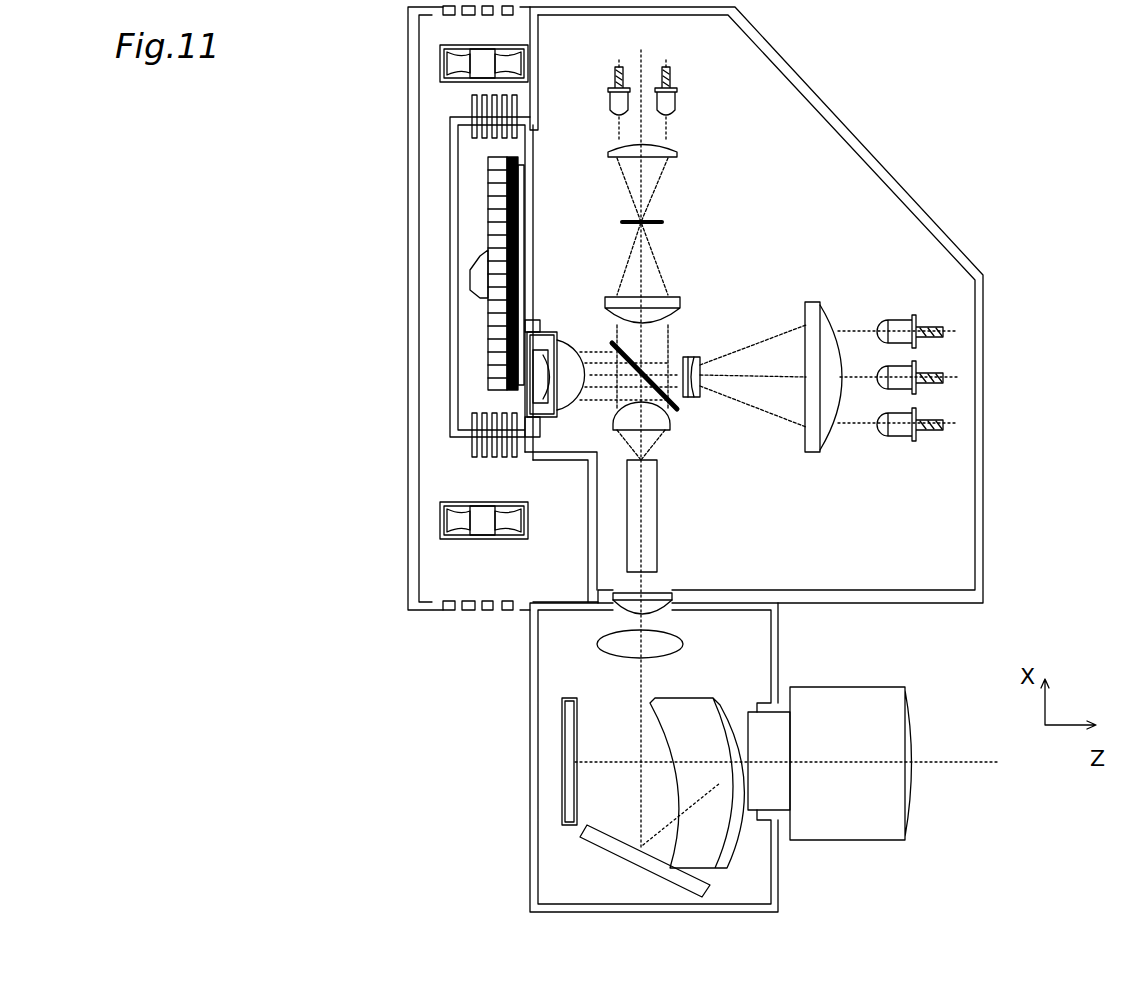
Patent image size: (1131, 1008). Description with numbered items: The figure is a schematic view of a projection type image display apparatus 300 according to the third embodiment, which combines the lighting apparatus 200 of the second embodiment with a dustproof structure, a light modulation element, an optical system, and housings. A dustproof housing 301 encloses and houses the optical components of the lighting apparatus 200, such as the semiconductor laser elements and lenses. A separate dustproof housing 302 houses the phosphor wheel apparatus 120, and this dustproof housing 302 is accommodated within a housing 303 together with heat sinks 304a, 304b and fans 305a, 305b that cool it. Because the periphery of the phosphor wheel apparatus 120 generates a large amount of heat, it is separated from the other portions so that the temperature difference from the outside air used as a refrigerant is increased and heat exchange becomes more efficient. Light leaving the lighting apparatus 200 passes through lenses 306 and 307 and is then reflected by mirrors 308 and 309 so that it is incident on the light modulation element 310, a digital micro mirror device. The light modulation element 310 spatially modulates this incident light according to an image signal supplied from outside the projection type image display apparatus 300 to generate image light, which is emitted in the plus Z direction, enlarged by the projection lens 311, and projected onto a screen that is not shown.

The phosphor wheel apparatus 120 is at (487, 215).
The lighting apparatus 200 is at (797, 137).
The projection type image display apparatus 300 is at (1122, 223).
The dustproof housing 301 is at (911, 192).
The dustproof housing 302 is at (452, 368).
The housing 303 is at (409, 306).
The heat sink 304a is at (470, 101).
The heat sink 304b is at (475, 452).
The fan 305a is at (430, 68).
The fan 305b is at (435, 522).
The lens 306 is at (613, 600).
The lens 307 is at (625, 645).
The mirror 308 is at (583, 857).
The mirror 309 is at (732, 845).
The light modulation element 310 is at (560, 785).
The projection lens 311 is at (880, 827).